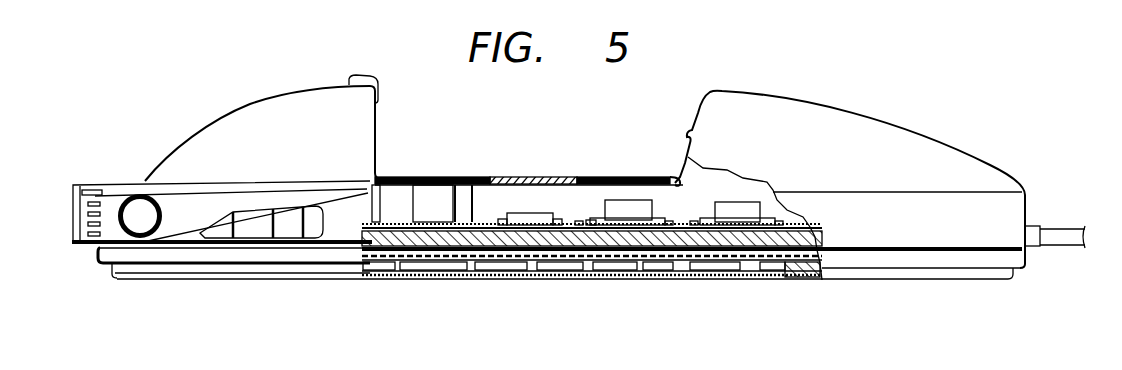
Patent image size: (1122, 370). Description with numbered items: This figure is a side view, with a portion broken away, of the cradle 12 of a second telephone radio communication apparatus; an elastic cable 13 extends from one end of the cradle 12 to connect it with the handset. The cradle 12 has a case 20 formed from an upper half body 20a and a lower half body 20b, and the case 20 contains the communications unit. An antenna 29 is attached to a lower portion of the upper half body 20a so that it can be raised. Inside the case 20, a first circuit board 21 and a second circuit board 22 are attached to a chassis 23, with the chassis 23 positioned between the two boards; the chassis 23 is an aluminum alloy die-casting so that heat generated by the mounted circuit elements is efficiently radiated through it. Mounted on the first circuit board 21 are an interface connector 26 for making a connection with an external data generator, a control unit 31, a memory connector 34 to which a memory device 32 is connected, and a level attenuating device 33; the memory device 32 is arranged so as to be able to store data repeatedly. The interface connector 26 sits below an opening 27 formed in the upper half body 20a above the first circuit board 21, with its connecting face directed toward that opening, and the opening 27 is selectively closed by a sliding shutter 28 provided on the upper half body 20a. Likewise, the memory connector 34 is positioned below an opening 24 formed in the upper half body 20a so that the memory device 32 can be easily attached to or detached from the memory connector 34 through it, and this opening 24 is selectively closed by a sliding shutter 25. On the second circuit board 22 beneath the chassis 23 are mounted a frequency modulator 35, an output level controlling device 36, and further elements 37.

The cradle 12 is at (865, 112).
The elastic cable 13 is at (1060, 232).
The case 20 is at (263, 314).
The upper half body 20a is at (203, 173).
The lower half body 20b is at (240, 258).
The first circuit board 21 is at (472, 223).
The second circuit board 22 is at (813, 275).
The chassis 23 is at (680, 243).
The opening 24 is at (672, 180).
The sliding shutter 25 is at (635, 182).
The interface connector 26 is at (427, 193).
The opening 27 is at (387, 170).
The sliding shutter 28 is at (440, 185).
The antenna 29 is at (172, 203).
The control unit 31 is at (747, 202).
The memory device 32 is at (618, 200).
The level attenuating device 33 is at (518, 213).
The memory connector 34 is at (583, 225).
The frequency modulator 35 is at (640, 277).
The output level controlling device 36 is at (745, 277).
The elements 37 is at (467, 277).